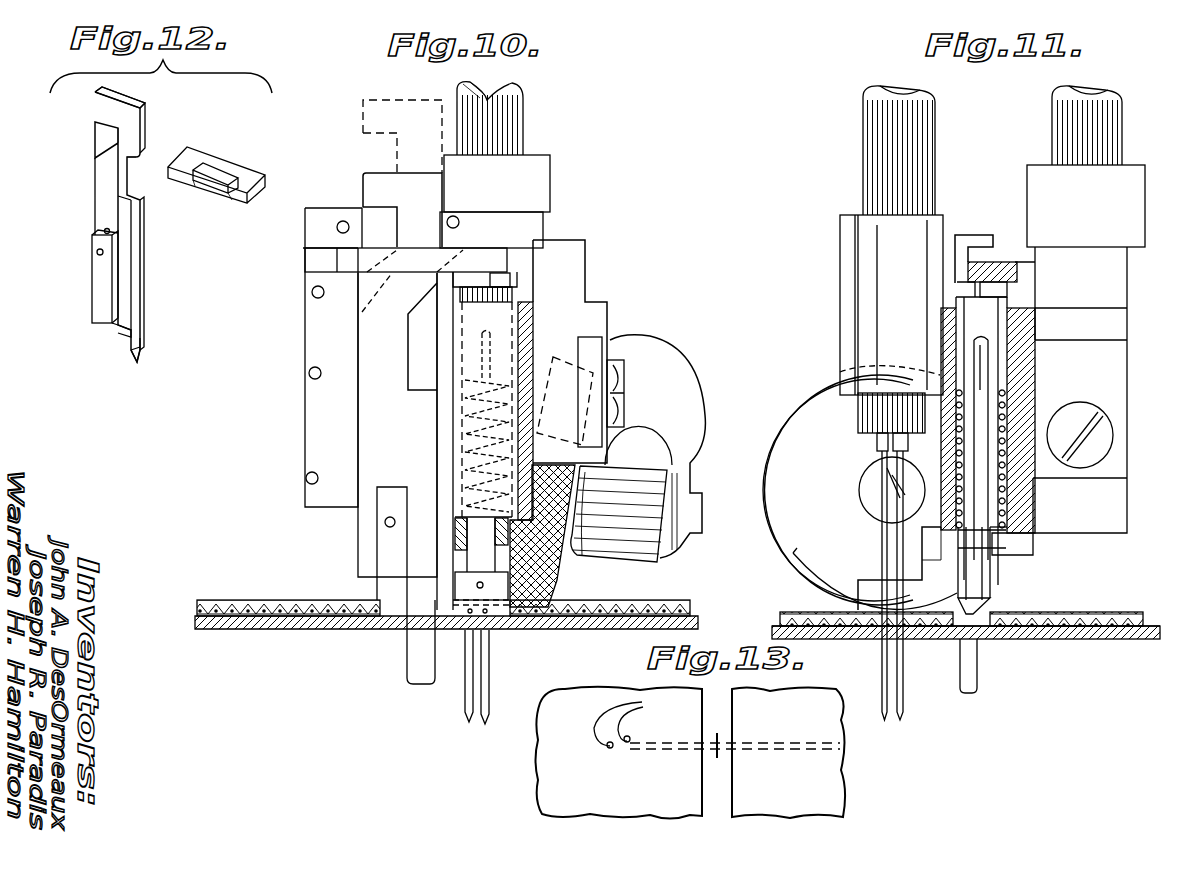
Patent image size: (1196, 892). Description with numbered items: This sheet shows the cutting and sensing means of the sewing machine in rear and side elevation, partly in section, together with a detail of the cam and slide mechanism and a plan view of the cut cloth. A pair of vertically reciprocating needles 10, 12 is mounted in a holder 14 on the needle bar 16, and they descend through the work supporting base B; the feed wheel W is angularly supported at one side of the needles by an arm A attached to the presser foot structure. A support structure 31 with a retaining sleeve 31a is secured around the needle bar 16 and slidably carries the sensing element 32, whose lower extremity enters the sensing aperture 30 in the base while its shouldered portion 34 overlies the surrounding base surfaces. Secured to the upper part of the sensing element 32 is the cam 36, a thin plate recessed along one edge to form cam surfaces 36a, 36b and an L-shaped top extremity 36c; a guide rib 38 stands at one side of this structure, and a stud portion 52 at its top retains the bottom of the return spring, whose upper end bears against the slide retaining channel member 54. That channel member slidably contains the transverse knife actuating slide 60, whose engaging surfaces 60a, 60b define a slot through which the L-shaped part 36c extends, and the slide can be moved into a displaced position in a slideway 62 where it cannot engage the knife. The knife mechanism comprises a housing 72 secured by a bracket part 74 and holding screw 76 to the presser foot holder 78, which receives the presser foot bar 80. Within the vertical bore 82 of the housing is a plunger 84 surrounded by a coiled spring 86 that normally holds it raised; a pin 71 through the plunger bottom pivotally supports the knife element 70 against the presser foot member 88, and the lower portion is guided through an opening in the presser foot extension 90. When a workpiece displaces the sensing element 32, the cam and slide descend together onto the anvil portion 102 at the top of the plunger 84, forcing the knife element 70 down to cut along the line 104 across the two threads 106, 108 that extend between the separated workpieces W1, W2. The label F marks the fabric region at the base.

In FIG. 10, the needle 10 is at (487, 662).
In FIG. 11, the needle 10 is at (880, 668).
In FIG. 10, the needle 12 is at (470, 695).
In FIG. 11, the needle 12 is at (904, 668).
In FIG. 11, the holder 14 is at (875, 418).
In FIG. 11, the needle bar 16 is at (868, 148).
In FIG. 10, the sensing aperture 30 is at (405, 640).
In FIG. 11, the sensing aperture 30 is at (1005, 640).
In FIG. 10, the support structure 31 is at (304, 354).
In FIG. 10, the retaining sleeve 31a is at (548, 222).
In FIG. 11, the retaining sleeve 31a is at (875, 265).
In FIG. 12, the sensing element 32 is at (141, 342).
In FIG. 10, the sensing element 32 is at (415, 670).
In FIG. 11, the sensing element 32 is at (978, 675).
In FIG. 12, the shouldered portion 34 is at (120, 330).
In FIG. 12, the cam 36 is at (126, 262).
In FIG. 10, the cam 36 is at (372, 410).
In FIG. 12, the cam surface 36a is at (108, 152).
In FIG. 10, the cam surface 36a is at (365, 290).
In FIG. 12, the cam surface 36b is at (140, 152).
In FIG. 10, the cam surface 36b is at (418, 318).
In FIG. 12, the L-shaped top extremity 36c is at (100, 104).
In FIG. 10, the L-shaped top extremity 36c is at (370, 180).
In FIG. 12, the guide rib 38 is at (100, 288).
In FIG. 12, the stud portion 52 is at (106, 229).
In FIG. 11, the slide retaining channel member 54 is at (960, 235).
In FIG. 12, the knife actuating slide 60 is at (215, 163).
In FIG. 10, the knife actuating slide 60 is at (352, 248).
In FIG. 11, the knife actuating slide 60 is at (995, 268).
In FIG. 12, the engaging surface 60a is at (197, 183).
In FIG. 12, the engaging surface 60b is at (232, 196).
In FIG. 10, the slideway 62 is at (320, 262).
In FIG. 10, the knife element 70 is at (460, 585).
In FIG. 11, the knife element 70 is at (985, 604).
In FIG. 10, the pin 71 is at (478, 584).
In FIG. 11, the pin 71 is at (995, 580).
In FIG. 10, the housing 72 is at (528, 338).
In FIG. 11, the housing 72 is at (1015, 380).
In FIG. 11, the bracket part 74 is at (1128, 382).
In FIG. 11, the holding screw 76 is at (1105, 443).
In FIG. 11, the presser foot holder 78 is at (1120, 290).
In FIG. 10, the presser foot bar 80 is at (520, 125).
In FIG. 11, the presser foot bar 80 is at (1056, 118).
In FIG. 10, the vertical bore 82 is at (470, 400).
In FIG. 11, the vertical bore 82 is at (1005, 395).
In FIG. 10, the plunger 84 is at (478, 540).
In FIG. 11, the plunger 84 is at (975, 515).
In FIG. 10, the coiled spring 86 is at (470, 460).
In FIG. 11, the coiled spring 86 is at (1005, 495).
In FIG. 11, the presser foot member 88 is at (935, 555).
In FIG. 11, the presser foot extension 90 is at (1020, 544).
In FIG. 10, the anvil portion 102 is at (500, 282).
In FIG. 11, the anvil portion 102 is at (990, 290).
In FIG. 13, the line of cutting 104 is at (720, 730).
In FIG. 13, the thread of stitching material 106 is at (660, 738).
In FIG. 13, the thread of stitching material 108 is at (655, 750).
In FIG. 10, the arm A is at (678, 377).
In FIG. 10, the work supporting base B is at (674, 616).
In FIG. 11, the work supporting base B is at (1152, 628).
In FIG. 10, the fabric F is at (298, 603).
In FIG. 10, the wheel W is at (552, 580).
In FIG. 11, the wheel W is at (766, 524).
In FIG. 11, the workpiece W1 is at (800, 615).
In FIG. 13, the workpiece W1 is at (666, 800).
In FIG. 11, the workpiece W2 is at (1095, 614).
In FIG. 13, the workpiece W2 is at (790, 800).